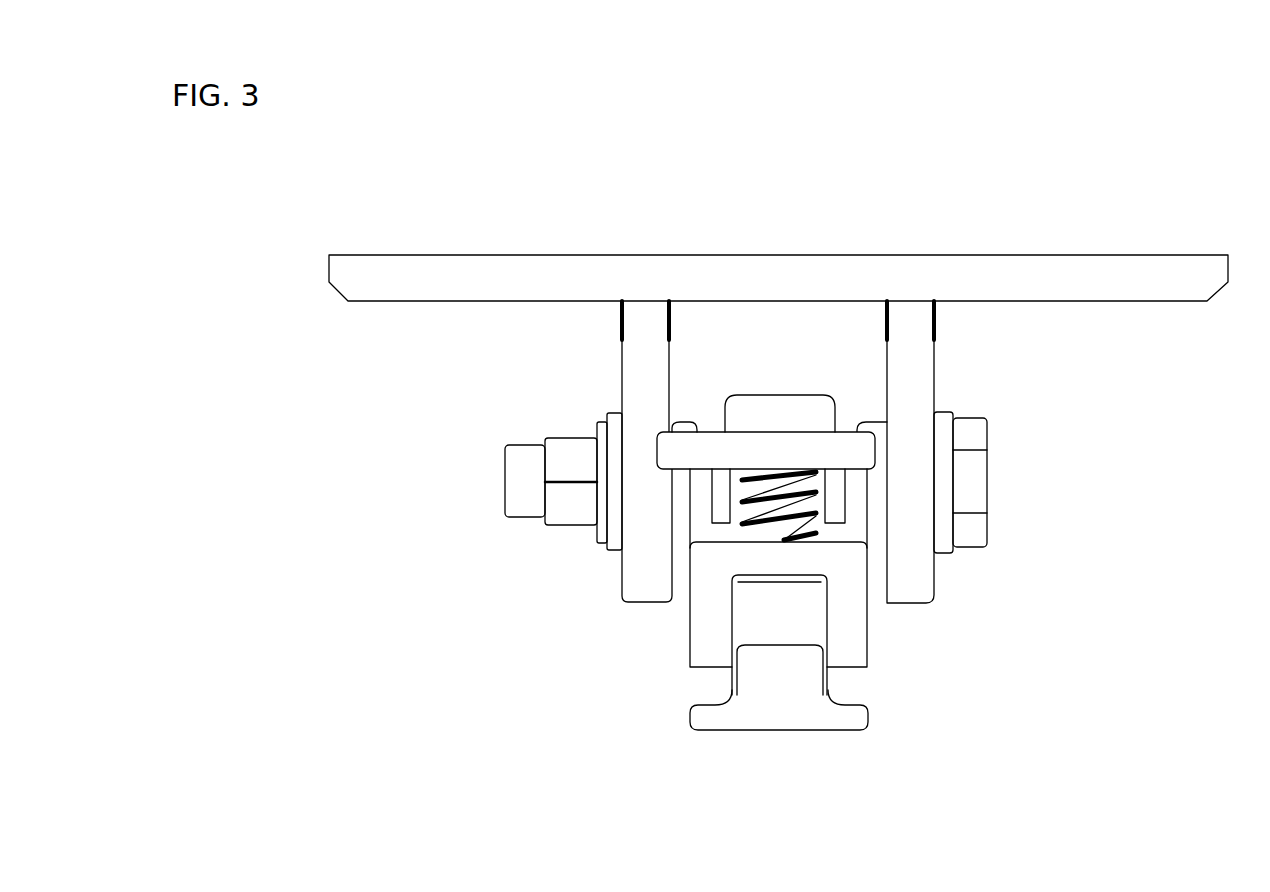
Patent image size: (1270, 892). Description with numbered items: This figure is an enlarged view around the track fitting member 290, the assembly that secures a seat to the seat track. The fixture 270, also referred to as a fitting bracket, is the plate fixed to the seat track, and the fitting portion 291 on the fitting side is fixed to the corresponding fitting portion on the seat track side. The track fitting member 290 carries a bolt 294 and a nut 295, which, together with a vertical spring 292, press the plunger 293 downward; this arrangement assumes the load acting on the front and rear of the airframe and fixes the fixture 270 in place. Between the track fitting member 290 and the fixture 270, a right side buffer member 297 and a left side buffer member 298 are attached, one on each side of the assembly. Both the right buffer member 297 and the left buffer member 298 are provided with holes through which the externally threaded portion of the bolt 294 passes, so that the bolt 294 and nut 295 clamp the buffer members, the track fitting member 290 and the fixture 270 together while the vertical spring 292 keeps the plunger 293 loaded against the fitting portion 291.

The fixture 270 is at (1072, 275).
The track fitting member 290 is at (677, 460).
The fitting portion 291 is at (755, 717).
The vertical spring 292 is at (745, 482).
The plunger 293 is at (698, 647).
The bolt 294 is at (978, 497).
The nut 295 is at (562, 512).
The right side buffer member 297 is at (877, 517).
The left side buffer member 298 is at (683, 513).